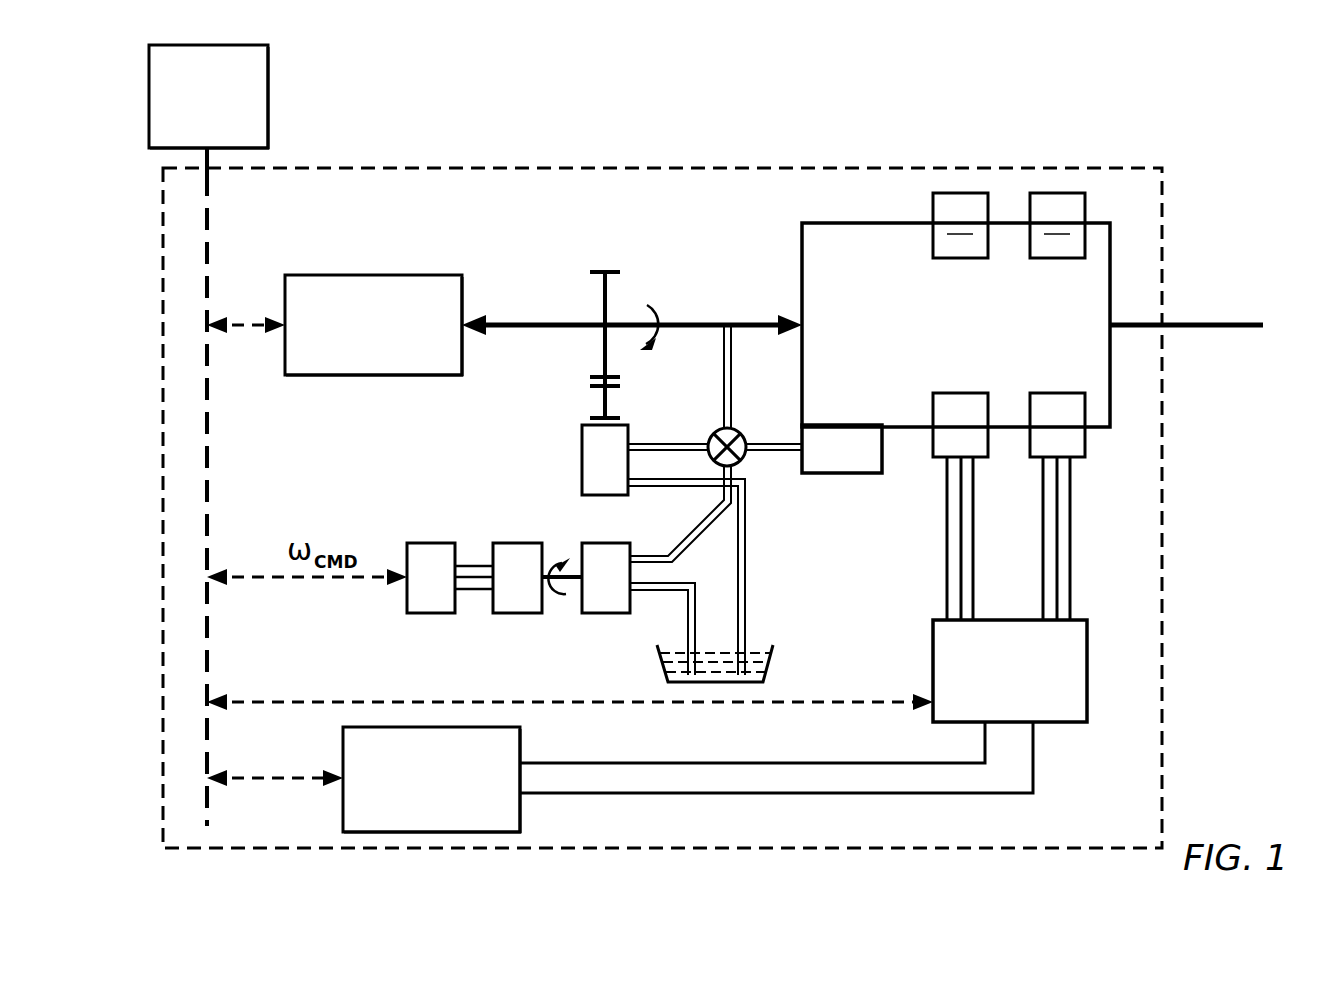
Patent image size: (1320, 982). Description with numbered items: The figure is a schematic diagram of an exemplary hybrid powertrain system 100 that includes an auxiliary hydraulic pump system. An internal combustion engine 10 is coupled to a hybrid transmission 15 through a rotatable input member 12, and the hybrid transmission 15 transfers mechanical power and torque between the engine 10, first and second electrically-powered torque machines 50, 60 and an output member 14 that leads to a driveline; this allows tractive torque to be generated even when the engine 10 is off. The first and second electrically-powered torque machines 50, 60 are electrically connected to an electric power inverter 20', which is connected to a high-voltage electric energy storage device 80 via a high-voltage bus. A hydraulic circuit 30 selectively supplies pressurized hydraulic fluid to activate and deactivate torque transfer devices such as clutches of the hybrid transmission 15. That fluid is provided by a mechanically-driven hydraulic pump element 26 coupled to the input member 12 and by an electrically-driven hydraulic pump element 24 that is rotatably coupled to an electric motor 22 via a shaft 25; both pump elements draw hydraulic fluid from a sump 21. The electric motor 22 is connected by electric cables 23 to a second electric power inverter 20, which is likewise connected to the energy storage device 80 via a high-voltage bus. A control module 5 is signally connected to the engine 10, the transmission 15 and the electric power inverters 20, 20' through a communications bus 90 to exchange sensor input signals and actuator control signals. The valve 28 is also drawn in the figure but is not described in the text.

The control module 5 is at (200, 128).
The internal combustion engine 10 is at (360, 356).
The rotatable input member 12 is at (538, 322).
The output member 14 is at (1217, 322).
The hybrid transmission 15 is at (943, 355).
The electric power inverter 20 is at (427, 542).
The electric power inverter 20' is at (803, 706).
The sump 21 is at (772, 668).
The electric motor 22 is at (512, 550).
The electric cables 23 is at (467, 593).
The electrically-driven hydraulic pump element 24 is at (596, 550).
The shaft 25 is at (573, 582).
The mechanically-driven hydraulic pump element 26 is at (588, 460).
The valve 28 is at (742, 462).
The hydraulic circuit 30 is at (843, 478).
The first electrically-powered torque machine 50 is at (947, 436).
The second electrically-powered torque machine 60 is at (1044, 436).
The high-voltage electric energy storage device 80 is at (418, 811).
The communications bus 90 is at (210, 805).
The hybrid powertrain system 100 is at (1124, 840).